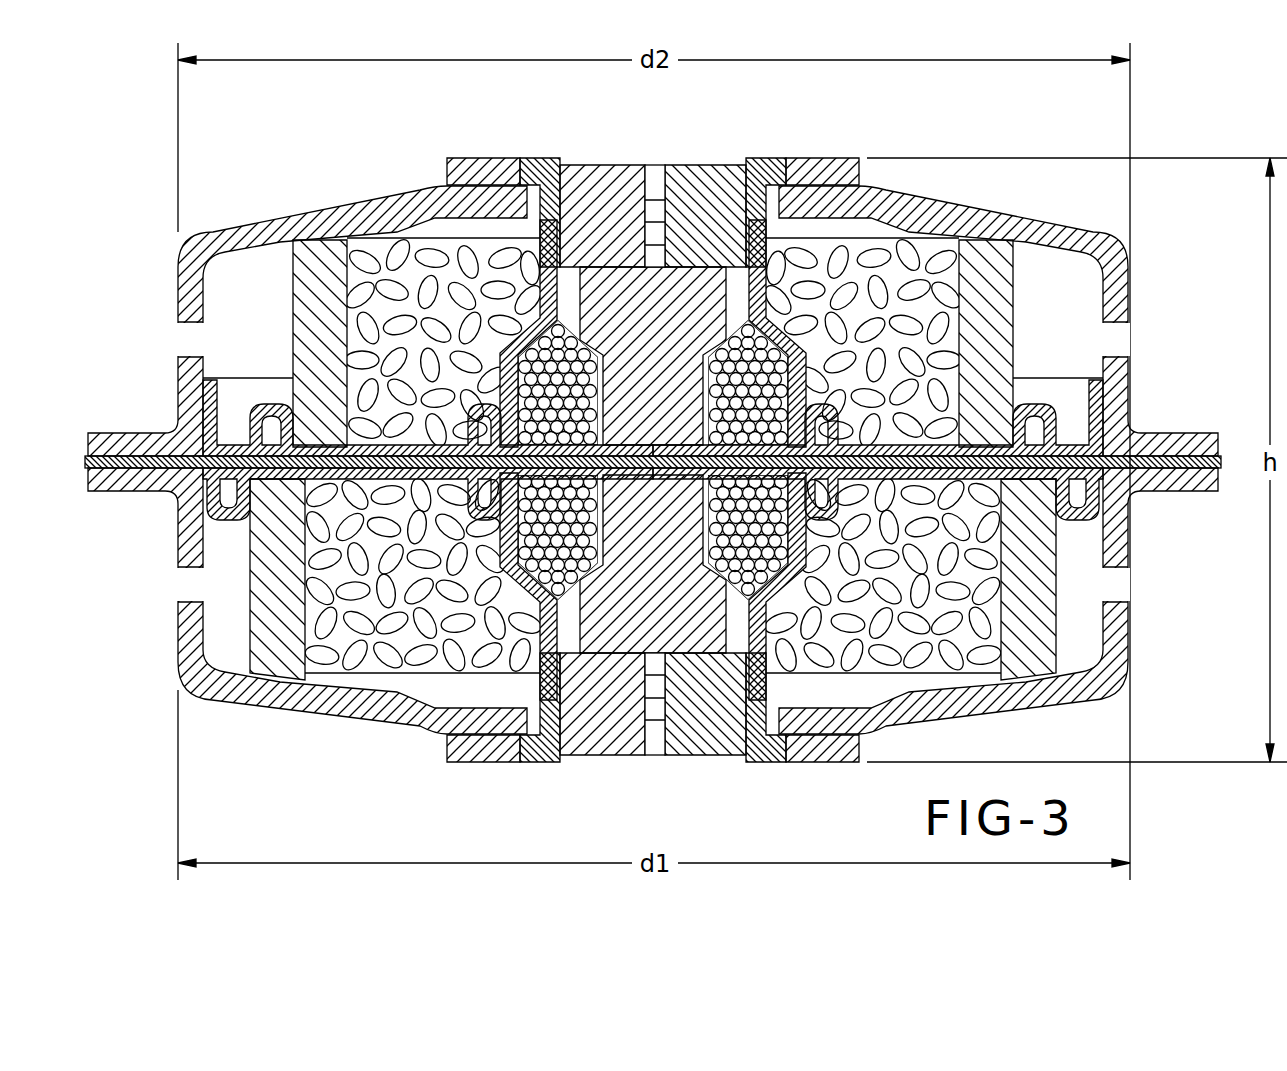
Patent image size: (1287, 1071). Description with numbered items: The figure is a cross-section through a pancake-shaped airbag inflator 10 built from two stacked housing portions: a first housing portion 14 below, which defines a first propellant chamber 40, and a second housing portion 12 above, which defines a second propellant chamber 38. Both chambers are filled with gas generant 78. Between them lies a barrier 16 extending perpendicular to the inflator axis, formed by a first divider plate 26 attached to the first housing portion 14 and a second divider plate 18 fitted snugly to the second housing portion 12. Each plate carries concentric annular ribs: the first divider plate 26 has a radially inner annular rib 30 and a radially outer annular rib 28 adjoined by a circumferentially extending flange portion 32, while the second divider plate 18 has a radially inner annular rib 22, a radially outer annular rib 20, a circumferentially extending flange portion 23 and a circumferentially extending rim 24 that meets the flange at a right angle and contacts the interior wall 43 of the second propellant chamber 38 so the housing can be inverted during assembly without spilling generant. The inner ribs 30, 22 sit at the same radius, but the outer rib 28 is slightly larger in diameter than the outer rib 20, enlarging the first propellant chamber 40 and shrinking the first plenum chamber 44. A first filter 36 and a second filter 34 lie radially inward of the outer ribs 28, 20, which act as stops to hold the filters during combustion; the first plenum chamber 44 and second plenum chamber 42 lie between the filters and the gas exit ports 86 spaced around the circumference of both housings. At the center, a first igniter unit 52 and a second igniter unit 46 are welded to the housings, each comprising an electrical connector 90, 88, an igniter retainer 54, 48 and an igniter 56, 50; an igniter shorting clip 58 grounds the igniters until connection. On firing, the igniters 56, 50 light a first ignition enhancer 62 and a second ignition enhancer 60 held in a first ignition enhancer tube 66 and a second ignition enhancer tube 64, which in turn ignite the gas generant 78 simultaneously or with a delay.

The inflator 10 is at (312, 180).
The second housing portion 12 is at (243, 226).
The first housing portion 14 is at (1120, 674).
The barrier 16 is at (408, 476).
The second divider plate 18 is at (1075, 454).
The radially outer annular rib of second divider plate 20 is at (221, 393).
The radially inner annular rib of second divider plate 22 is at (836, 400).
The circumferentially extending flange portion of second divider plate 23 is at (1126, 436).
The circumferentially extending rim 24 is at (1056, 412).
The first divider plate 26 is at (1108, 492).
The radially outer annular rib of first divider plate 28 is at (214, 524).
The radially inner annular rib of first divider plate 30 is at (852, 505).
The circumferentially extending flange portion of first divider plate 32 is at (1150, 482).
The second filter 34 is at (1000, 318).
The first filter 36 is at (1068, 652).
The second propellant chamber 38 is at (935, 325).
The first propellant chamber 40 is at (1030, 607).
The second plenum chamber 42 is at (228, 338).
The interior wall of second propellant chamber 43 is at (1105, 290).
The first plenum chamber 44 is at (212, 618).
The second igniter unit 46 is at (589, 158).
The igniter retainer of second igniter unit 48 is at (836, 165).
The second igniter 50 is at (670, 320).
The first igniter unit 52 is at (589, 763).
The igniter retainer of first igniter unit 54 is at (820, 752).
The first igniter 56 is at (640, 612).
The igniter shorting clip 58 is at (723, 158).
The second ignition enhancer 60 is at (460, 234).
The first ignition enhancer 62 is at (477, 618).
The second ignition enhancer tube 64 is at (506, 250).
The first ignition enhancer tube 66 is at (560, 650).
The gas generant 78 is at (418, 282).
The gas exit ports 86 is at (188, 340).
The electrical connector of second igniter unit 88 is at (651, 182).
The electrical connector of first igniter unit 90 is at (615, 762).